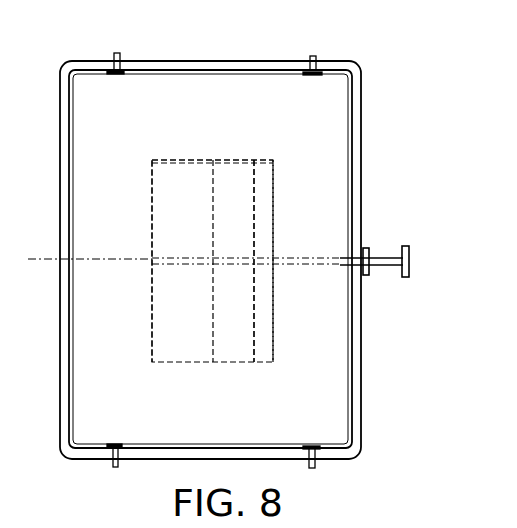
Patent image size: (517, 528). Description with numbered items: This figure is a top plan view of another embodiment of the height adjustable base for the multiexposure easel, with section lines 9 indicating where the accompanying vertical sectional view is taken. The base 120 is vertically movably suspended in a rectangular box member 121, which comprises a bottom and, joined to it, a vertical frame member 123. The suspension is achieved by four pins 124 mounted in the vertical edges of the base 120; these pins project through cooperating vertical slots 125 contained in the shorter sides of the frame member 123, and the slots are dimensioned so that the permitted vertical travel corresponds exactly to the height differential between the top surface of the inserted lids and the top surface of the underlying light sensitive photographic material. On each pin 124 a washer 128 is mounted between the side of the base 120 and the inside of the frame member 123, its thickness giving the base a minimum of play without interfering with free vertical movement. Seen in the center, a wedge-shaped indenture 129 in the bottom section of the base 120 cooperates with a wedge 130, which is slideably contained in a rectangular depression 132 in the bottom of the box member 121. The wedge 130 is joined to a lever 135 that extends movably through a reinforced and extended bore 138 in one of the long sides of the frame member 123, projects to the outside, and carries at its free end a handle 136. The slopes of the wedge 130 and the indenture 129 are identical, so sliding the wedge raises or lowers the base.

The section lines 9— 9 is at (27, 258).
The base 120 is at (240, 418).
The rectangular box member 121 is at (164, 51).
The vertical frame member 123 is at (58, 436).
The pins 124 is at (313, 57).
The vertical slots 125 is at (318, 70).
The washer 128 is at (108, 71).
The wedge-shaped indenture 129 is at (152, 183).
The wedge 130 is at (256, 172).
The rectangular depression 132 is at (197, 160).
The lever 135 is at (383, 267).
The handle 136 is at (408, 278).
The reinforced and extended bore 138 is at (368, 252).